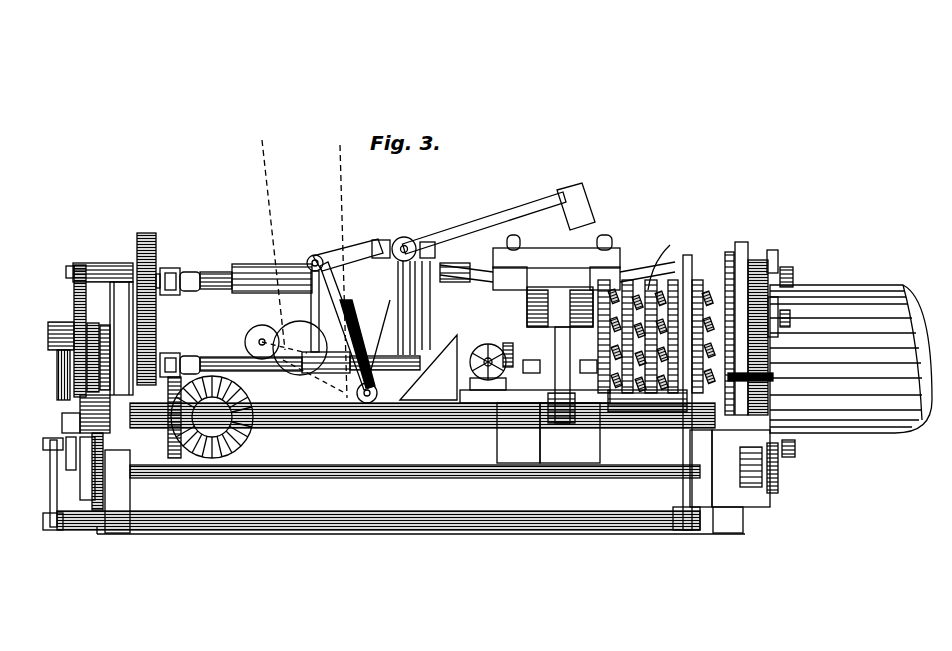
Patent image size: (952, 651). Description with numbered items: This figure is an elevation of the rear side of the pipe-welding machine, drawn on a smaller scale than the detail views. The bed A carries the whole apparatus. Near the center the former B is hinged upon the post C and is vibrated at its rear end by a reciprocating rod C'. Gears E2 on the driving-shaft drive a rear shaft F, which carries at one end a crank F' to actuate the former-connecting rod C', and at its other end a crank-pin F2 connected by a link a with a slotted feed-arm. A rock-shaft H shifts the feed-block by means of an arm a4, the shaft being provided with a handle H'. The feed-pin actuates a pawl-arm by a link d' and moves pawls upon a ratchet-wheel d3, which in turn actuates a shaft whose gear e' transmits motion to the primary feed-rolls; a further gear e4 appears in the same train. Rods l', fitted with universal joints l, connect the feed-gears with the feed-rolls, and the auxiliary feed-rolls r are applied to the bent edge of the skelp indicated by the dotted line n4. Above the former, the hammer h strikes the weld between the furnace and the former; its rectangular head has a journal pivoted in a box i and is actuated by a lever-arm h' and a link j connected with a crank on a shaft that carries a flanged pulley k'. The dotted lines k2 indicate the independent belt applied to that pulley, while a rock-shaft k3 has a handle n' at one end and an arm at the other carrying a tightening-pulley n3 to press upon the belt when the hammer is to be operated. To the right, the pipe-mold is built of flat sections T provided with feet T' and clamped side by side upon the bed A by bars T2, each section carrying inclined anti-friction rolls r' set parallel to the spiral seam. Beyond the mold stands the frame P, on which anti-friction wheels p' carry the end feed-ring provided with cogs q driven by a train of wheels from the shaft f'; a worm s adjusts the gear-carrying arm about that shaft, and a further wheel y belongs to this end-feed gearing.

The bed A is at (492, 555).
The rock-shaft H is at (378, 529).
The handle H' is at (695, 505).
The gear e' is at (148, 295).
The ratchet-wheel d3 is at (74, 284).
The link d' is at (66, 361).
The crank-pin F2 is at (62, 422).
The link a is at (72, 467).
The arm a4 is at (50, 498).
The gear e4 is at (103, 478).
The gears E2 is at (240, 440).
The universal joints l is at (180, 307).
The rods l' is at (310, 307).
The belt k2 is at (341, 190).
The lever-arm h' is at (345, 248).
The link j is at (311, 311).
The tightening-pulley n3 is at (258, 330).
The flanged pulley k' is at (347, 326).
The handle n' is at (369, 344).
The rock-shaft k3 is at (378, 393).
The box i is at (405, 238).
The hammer h is at (506, 218).
The dotted line n4 is at (484, 346).
The auxiliary feed-rolls r is at (504, 345).
The post C is at (556, 296).
The reciprocating rod C' is at (556, 355).
The crank F' is at (562, 420).
The rear shaft F is at (518, 411).
The shaft f' is at (515, 491).
The former B is at (476, 265).
The flat sections T is at (656, 379).
The feet T' is at (709, 377).
The bars T2 is at (670, 412).
The anti-friction wheels p' is at (730, 314).
The frame P is at (745, 242).
The anti-friction rolls r' is at (731, 349).
The cogs q is at (772, 337).
The worm s is at (760, 487).
The gear y is at (780, 490).